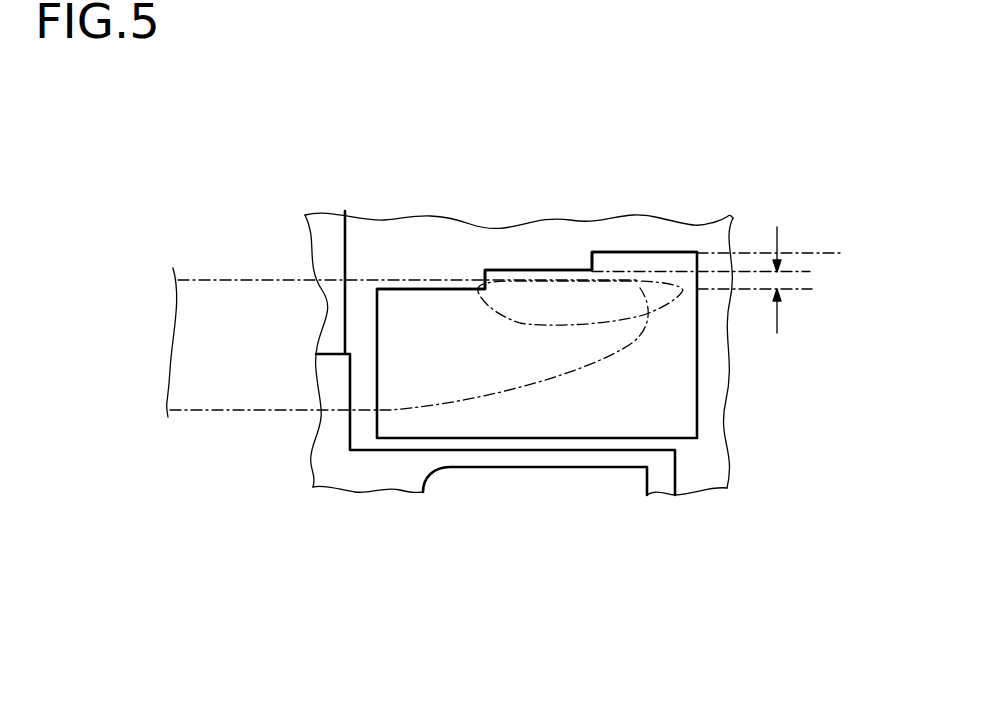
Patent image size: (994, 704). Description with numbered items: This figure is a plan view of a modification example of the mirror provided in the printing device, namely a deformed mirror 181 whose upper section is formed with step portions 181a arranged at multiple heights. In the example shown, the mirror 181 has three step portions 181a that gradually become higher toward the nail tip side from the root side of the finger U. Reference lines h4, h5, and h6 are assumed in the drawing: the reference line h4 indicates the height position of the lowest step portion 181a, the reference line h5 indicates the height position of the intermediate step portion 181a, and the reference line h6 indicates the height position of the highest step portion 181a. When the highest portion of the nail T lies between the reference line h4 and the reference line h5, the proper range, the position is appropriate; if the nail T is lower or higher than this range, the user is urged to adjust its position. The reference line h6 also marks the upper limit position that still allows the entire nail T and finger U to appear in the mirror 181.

The mirror 181 is at (670, 403).
The step portions 181a is at (630, 252).
The finger U is at (210, 278).
The nail T is at (660, 300).
The reference line h4 is at (702, 290).
The reference line h5 is at (673, 272).
The reference line h6 is at (812, 253).